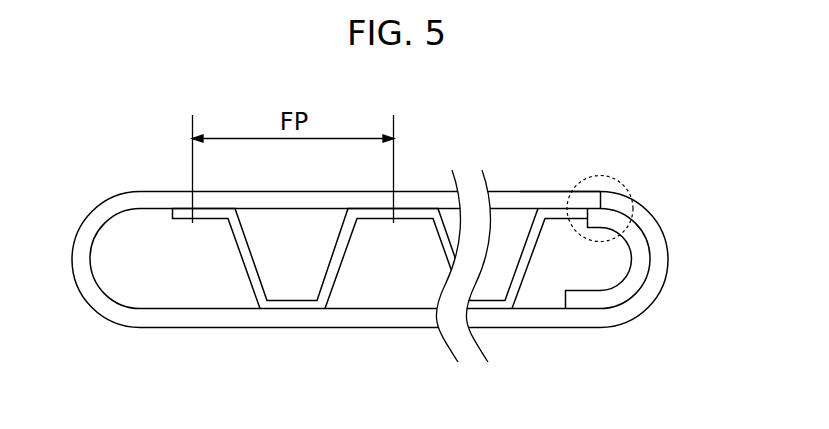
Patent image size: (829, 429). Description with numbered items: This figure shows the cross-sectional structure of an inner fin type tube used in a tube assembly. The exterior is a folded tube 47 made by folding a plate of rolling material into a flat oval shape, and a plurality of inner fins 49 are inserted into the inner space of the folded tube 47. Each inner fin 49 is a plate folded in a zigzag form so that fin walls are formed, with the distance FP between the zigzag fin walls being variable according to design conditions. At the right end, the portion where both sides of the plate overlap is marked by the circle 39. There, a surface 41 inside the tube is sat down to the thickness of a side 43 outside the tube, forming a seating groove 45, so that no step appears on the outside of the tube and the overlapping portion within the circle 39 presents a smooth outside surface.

The circle 39 is at (583, 190).
The surface inside the inner fin type tube 41 is at (634, 221).
The side outside the inner fin type tube 43 is at (606, 198).
The seating groove 45 is at (590, 187).
The folded tube 47 is at (121, 313).
The inner fin 49 is at (245, 264).